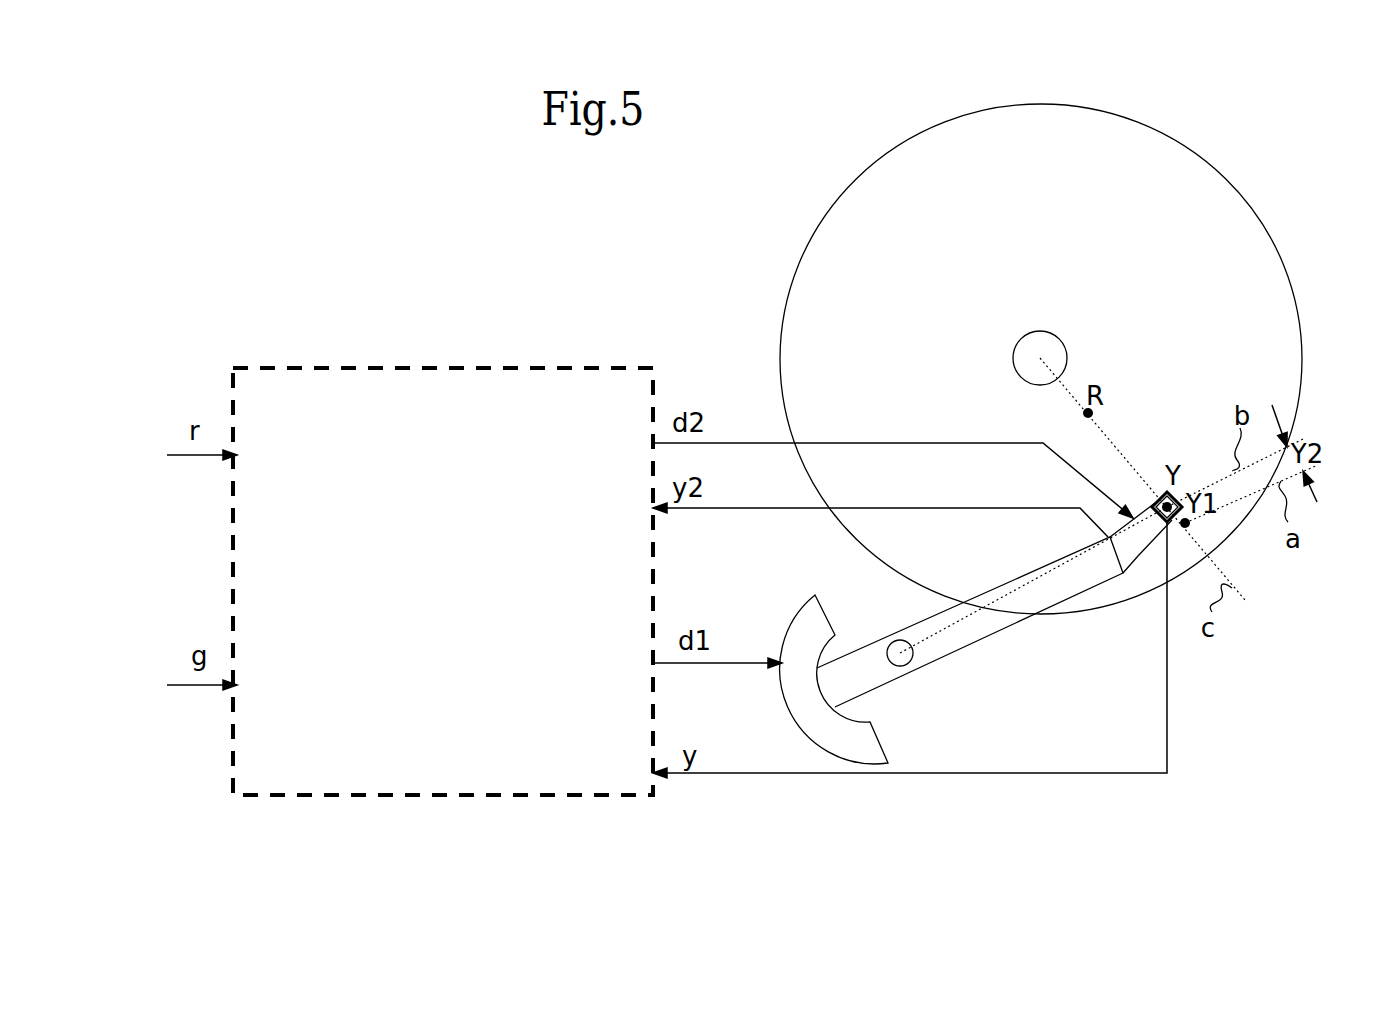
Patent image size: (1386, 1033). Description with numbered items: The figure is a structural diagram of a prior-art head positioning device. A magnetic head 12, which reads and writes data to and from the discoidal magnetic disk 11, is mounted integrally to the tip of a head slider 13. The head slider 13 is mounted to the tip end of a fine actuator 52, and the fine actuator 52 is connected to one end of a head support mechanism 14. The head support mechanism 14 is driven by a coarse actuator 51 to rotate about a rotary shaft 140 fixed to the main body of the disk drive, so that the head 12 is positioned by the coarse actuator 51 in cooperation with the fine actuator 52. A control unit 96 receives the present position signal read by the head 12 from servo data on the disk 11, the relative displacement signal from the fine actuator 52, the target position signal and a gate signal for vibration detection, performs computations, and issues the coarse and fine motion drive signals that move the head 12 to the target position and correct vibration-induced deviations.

The magnetic disk 11 is at (867, 208).
The magnetic head 12 is at (1180, 492).
The head slider 13 is at (1152, 503).
The head support mechanism 14 is at (922, 622).
The coarse actuator 51 is at (882, 748).
The fine actuator 52 is at (1138, 556).
The control unit 96 is at (442, 360).
The rotary shaft 140 is at (900, 664).